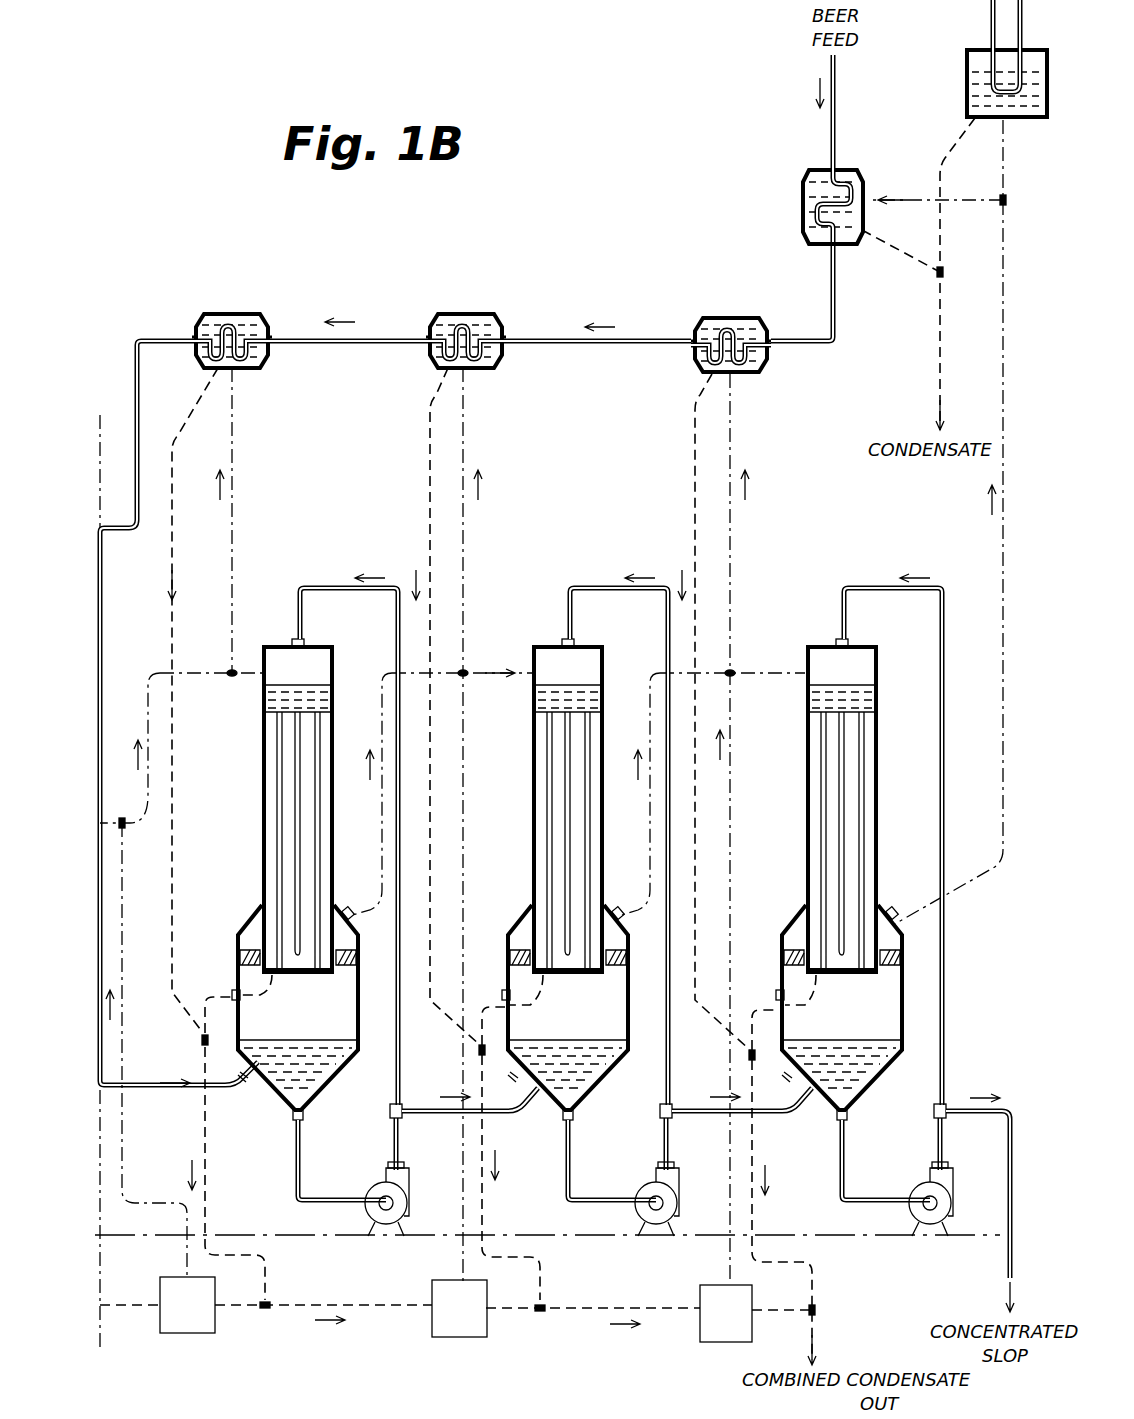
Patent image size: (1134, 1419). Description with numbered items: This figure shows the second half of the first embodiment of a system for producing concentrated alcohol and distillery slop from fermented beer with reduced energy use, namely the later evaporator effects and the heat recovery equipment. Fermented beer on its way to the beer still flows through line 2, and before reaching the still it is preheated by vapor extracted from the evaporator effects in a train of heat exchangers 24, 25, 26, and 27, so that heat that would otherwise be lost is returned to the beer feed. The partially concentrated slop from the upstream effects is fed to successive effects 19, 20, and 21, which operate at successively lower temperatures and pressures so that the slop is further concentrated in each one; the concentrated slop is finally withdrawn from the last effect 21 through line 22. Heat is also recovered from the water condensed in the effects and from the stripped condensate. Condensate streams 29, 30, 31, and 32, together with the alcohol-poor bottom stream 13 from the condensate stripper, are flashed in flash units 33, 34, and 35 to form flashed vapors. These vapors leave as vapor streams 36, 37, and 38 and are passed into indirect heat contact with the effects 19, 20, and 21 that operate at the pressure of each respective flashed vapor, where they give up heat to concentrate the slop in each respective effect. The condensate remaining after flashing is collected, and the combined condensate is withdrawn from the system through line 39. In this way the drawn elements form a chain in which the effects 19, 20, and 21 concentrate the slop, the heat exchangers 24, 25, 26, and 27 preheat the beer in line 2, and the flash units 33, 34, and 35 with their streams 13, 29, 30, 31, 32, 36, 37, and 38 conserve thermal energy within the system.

The line 2 is at (133, 522).
The bottom stream 13 is at (384, 1308).
The effect 19 is at (356, 976).
The effect 20 is at (622, 976).
The effect 21 is at (895, 994).
The line 22 is at (990, 1106).
The heat exchanger 24 is at (240, 314).
The heat exchanger 25 is at (478, 314).
The heat exchanger 26 is at (715, 318).
The heat exchanger 27 is at (808, 184).
The condensate stream 29 is at (176, 440).
The condensate stream 30 is at (427, 412).
The condensate stream 31 is at (270, 1290).
The condensate stream 32 is at (548, 1292).
The flash unit 33 is at (200, 1333).
The flash unit 34 is at (476, 1337).
The flash unit 35 is at (702, 1340).
The vapor stream 36 is at (128, 1176).
The vapor stream 37 is at (468, 875).
The vapor stream 38 is at (738, 872).
The line 39 is at (822, 1318).